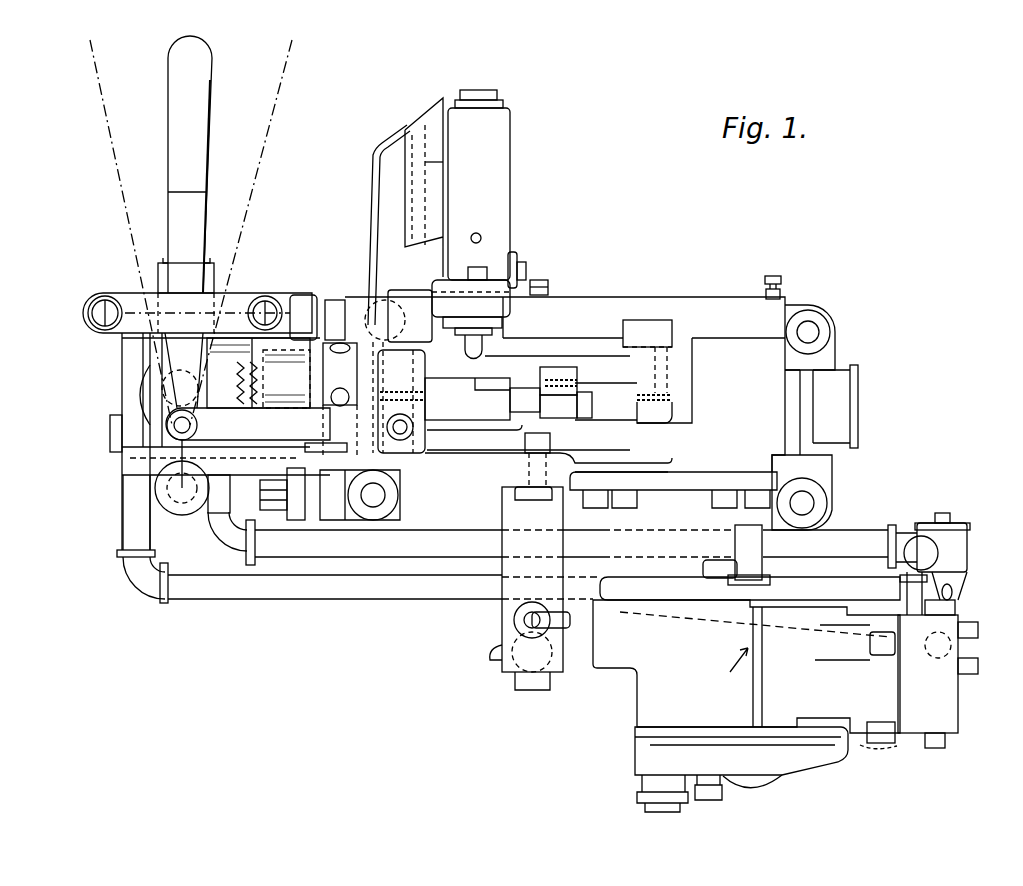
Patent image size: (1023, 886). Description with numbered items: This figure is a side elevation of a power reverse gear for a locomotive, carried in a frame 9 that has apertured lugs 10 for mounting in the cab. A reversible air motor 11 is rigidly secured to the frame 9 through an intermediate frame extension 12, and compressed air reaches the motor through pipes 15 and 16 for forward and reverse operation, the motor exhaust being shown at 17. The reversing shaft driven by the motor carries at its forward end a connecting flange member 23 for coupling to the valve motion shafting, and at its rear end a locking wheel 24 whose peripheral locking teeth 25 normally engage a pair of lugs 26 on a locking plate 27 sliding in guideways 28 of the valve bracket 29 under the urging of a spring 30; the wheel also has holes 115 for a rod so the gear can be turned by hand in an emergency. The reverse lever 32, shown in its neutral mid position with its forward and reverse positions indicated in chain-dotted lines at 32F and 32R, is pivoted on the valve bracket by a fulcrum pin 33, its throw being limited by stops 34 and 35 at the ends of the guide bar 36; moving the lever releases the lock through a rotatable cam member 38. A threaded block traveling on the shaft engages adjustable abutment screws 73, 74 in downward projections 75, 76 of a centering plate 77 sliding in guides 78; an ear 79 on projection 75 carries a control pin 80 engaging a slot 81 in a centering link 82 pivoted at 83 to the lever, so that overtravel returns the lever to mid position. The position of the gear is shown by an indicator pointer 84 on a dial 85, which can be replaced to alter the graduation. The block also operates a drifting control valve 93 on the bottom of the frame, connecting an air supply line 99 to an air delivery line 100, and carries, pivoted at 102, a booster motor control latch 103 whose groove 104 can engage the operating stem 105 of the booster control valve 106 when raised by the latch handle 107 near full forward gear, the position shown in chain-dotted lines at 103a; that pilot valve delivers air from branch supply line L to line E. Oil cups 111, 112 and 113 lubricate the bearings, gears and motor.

The frame 9 is at (598, 297).
The apertured lugs 10 is at (372, 305).
The reversible air motor 11 is at (746, 694).
The intermediate frame extension 12 is at (673, 528).
The pipe 15 is at (123, 510).
The pipe 16 is at (910, 597).
The motor exhaust 17 is at (873, 745).
The connecting flange member 23 is at (835, 406).
The locking wheel 24 is at (341, 389).
The locking teeth or lugs 25 is at (318, 380).
The lugs 26 is at (316, 300).
The locking plate 27 is at (258, 373).
The guideways 28 is at (120, 447).
The valve bracket 29 is at (256, 494).
The spring 30 is at (250, 380).
The reverse lever 32 is at (187, 164).
The reverse position of reverse lever 32R is at (108, 113).
The forward position of reverse lever 32F is at (274, 112).
The fulcrum pin 33 is at (182, 500).
The stop 34 is at (237, 297).
The stop 35 is at (130, 297).
The guide bar 36 is at (195, 272).
The rotatable cam member 38 is at (141, 395).
The adjustable abutment screw 73 is at (431, 395).
The adjustable abutment screw 74 is at (637, 396).
The downward projection 75 is at (432, 425).
The downward projection 76 is at (647, 412).
The centering plate 77 is at (644, 380).
The guides 78 is at (425, 340).
The ear 79 is at (457, 450).
The control pin 80 is at (399, 441).
The slot 81 is at (408, 434).
The centering link 82 is at (248, 424).
The pivot 83 is at (176, 426).
The indicator pointer 84 is at (372, 173).
The dial 85 is at (441, 100).
The drifting control valve 93 is at (532, 588).
The air supply line 99 is at (490, 660).
The air delivery line 100 is at (570, 632).
The pivot 102 is at (588, 412).
The booster motor control latch 103 is at (575, 355).
The booster latch position 103a is at (483, 387).
The groove 104 is at (528, 388).
The operating stem 105 is at (484, 347).
The booster control valve 106 is at (471, 212).
The latch handle 107 is at (552, 437).
The oil cup 111 is at (547, 280).
The oil cup 112 is at (776, 278).
The oil cup 113 is at (957, 544).
The holes 115 is at (338, 404).
The line E is at (518, 267).
The branch supply line L is at (410, 316).